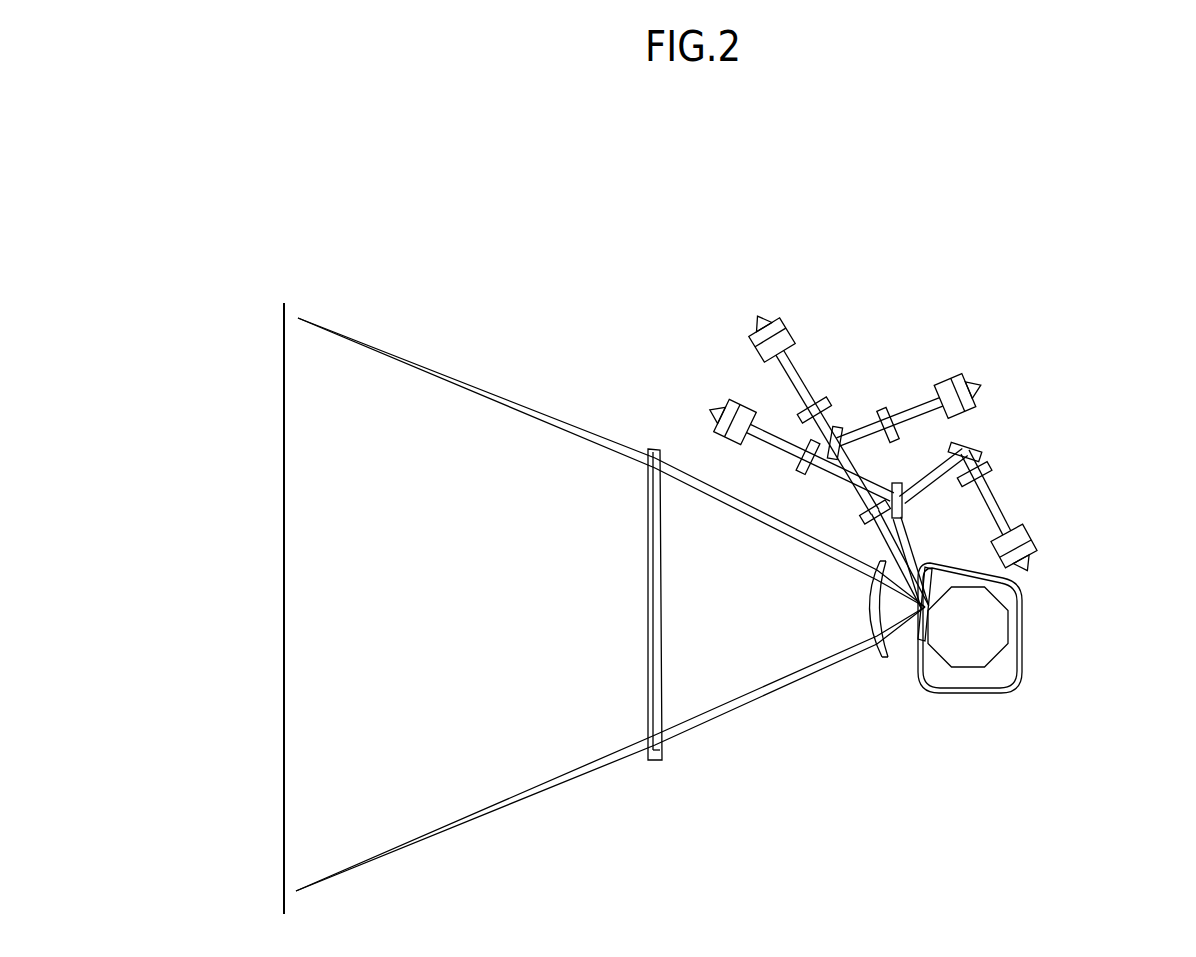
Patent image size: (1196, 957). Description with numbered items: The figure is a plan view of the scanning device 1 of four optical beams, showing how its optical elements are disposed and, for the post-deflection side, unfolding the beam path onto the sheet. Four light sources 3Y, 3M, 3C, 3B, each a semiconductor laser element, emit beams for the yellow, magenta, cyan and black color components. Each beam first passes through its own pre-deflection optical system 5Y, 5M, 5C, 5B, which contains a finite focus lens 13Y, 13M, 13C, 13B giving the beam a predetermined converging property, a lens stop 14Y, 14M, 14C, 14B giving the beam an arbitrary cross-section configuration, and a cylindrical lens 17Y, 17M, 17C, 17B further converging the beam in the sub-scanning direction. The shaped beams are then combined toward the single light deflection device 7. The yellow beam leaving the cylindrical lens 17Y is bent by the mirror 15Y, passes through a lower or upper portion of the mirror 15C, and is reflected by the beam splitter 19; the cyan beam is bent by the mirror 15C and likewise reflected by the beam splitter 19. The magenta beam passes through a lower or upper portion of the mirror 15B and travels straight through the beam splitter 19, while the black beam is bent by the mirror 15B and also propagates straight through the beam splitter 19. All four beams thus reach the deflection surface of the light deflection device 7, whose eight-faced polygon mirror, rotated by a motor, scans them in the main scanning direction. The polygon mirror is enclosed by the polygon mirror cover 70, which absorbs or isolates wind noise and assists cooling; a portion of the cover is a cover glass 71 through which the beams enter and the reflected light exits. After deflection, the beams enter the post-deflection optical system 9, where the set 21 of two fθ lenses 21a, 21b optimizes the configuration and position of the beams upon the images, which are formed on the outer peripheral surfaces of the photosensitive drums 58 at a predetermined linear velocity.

The scanning device 1 is at (327, 199).
The photosensitive drum 58 is at (284, 437).
The post-deflection optical system 9 is at (457, 617).
The pre-deflection optical system 5C is at (551, 337).
The pre-deflection optical system 5M is at (779, 198).
The pre-deflection optical system 5B is at (1027, 259).
The pre-deflection optical system 5Y is at (1180, 518).
The light source 3C is at (710, 410).
The light source 3M is at (758, 316).
The light source 3B is at (981, 385).
The light source 3Y is at (1030, 573).
The finite focus lens 13C is at (729, 399).
The finite focus lens 13M is at (787, 330).
The finite focus lens 13B is at (962, 374).
The finite focus lens 13Y is at (1037, 550).
The lens stop 14C is at (738, 447).
The lens stop 14M is at (762, 361).
The lens stop 14B is at (934, 385).
The lens stop 14Y is at (1024, 524).
The cylindrical lens 17C is at (800, 450).
The cylindrical lens 17M is at (826, 397).
The cylindrical lens 17B is at (888, 407).
The cylindrical lens 17Y is at (993, 468).
The mirror 15B is at (840, 428).
The mirror 15C is at (905, 480).
The mirror 15Y is at (983, 452).
The beam splitter 19 is at (865, 514).
The set of fθ lenses 21 is at (768, 604).
The fθ lens 21a is at (872, 610).
The fθ lens 21b is at (663, 610).
The light deflection device 7 is at (970, 667).
The polygon mirror cover 70 is at (1022, 688).
The cover glass 71 is at (930, 582).